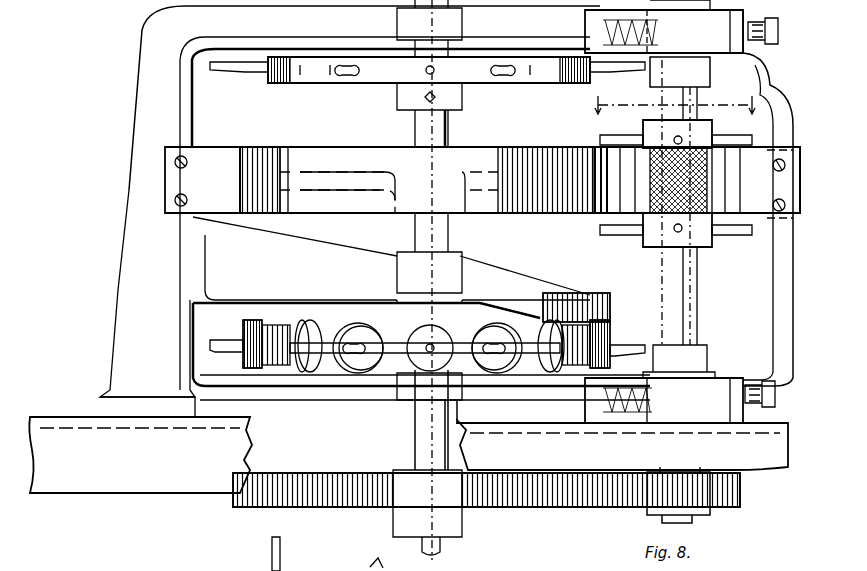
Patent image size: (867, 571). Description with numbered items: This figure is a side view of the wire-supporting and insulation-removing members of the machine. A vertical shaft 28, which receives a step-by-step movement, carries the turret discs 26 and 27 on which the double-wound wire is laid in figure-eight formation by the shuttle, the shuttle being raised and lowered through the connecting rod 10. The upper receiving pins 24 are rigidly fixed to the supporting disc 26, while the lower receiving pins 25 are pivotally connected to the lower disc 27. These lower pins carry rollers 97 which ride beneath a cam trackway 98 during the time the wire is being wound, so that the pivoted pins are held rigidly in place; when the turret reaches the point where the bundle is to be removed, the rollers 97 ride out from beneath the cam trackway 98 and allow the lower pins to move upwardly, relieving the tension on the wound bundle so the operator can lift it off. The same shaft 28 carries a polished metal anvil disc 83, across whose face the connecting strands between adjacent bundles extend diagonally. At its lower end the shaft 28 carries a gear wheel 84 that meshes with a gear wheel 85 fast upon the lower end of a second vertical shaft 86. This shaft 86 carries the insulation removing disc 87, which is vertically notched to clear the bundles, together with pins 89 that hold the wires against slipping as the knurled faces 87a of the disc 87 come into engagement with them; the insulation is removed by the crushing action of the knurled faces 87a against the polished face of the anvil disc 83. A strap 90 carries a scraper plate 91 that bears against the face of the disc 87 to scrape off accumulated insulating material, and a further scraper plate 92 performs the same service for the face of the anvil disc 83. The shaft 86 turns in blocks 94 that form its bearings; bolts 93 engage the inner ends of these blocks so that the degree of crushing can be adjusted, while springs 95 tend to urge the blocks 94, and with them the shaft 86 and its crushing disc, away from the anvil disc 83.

The connecting rod 10 is at (669, 99).
The upper receiving pins 24 is at (272, 82).
The lower receiving pins 25 is at (222, 340).
The upper turret disc 26 is at (338, 83).
The lower turret disc 27 is at (283, 343).
The vertical shaft 28 is at (450, 137).
The anvil disc 83 is at (520, 180).
The gear wheel 84 is at (494, 504).
The gear wheel 85 is at (742, 498).
The vertical shaft 86 is at (699, 292).
The insulation removing disc 87 is at (720, 220).
The knurled faces 87a is at (662, 222).
The pins 89 is at (612, 140).
The strap 90 is at (770, 318).
The scraper plate 91 is at (769, 184).
The scraper plate 92 is at (202, 180).
The adjusting bolts 93 is at (776, 4).
The bearing blocks 94 is at (721, 31).
The springs 95 is at (585, 25).
The rollers 97 is at (353, 320).
The cam trackway 98 is at (540, 330).